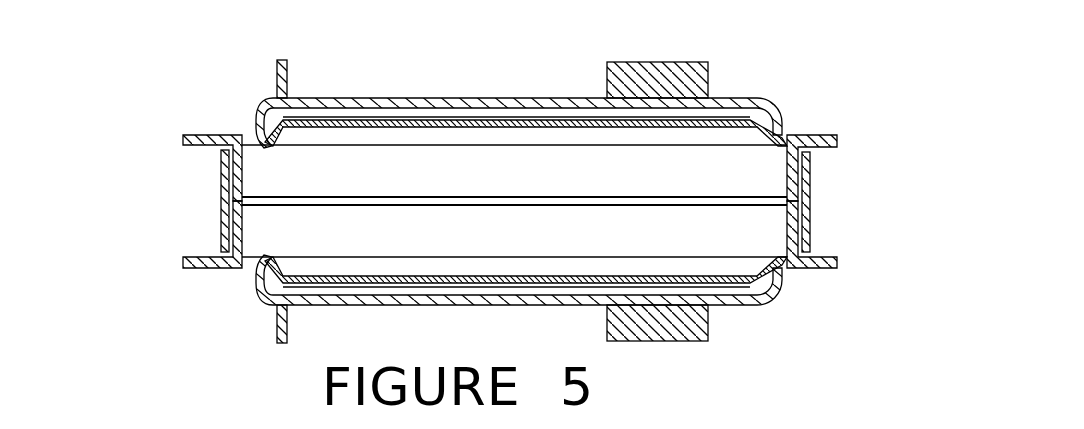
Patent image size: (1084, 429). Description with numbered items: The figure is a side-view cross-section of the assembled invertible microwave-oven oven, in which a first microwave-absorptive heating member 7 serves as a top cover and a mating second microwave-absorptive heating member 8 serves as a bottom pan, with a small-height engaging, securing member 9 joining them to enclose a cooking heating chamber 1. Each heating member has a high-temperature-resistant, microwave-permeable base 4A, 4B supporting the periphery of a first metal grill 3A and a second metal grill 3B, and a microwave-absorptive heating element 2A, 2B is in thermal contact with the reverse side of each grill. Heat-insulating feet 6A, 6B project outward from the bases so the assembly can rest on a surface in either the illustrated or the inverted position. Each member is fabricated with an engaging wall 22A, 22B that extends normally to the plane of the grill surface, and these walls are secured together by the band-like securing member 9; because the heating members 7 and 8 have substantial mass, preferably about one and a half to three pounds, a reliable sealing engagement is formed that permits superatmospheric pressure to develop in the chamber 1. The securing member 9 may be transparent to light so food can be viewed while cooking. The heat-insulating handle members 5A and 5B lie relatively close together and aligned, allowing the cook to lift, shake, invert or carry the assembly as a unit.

The cooking heating chamber 1 is at (573, 164).
The microwave-absorptive heating element 2A is at (444, 110).
The microwave-absorptive heating element 2B is at (443, 304).
The first metal grill 3A is at (446, 124).
The second metal grill 3B is at (445, 290).
The microwave-permeable base 4A is at (188, 75).
The microwave-permeable base 4B is at (182, 271).
The heat-insulating handle 5A is at (173, 168).
The heat-insulating handle 5B is at (173, 234).
The heat-insulating foot 6A is at (196, 55).
The heat-insulating foot 6B is at (195, 345).
The first microwave-absorptive heating member 7 is at (754, 70).
The second microwave-absorptive heating member 8 is at (754, 334).
The engaging, securing member 9 is at (504, 196).
The engaging wall 22A is at (861, 169).
The engaging wall 22B is at (861, 234).